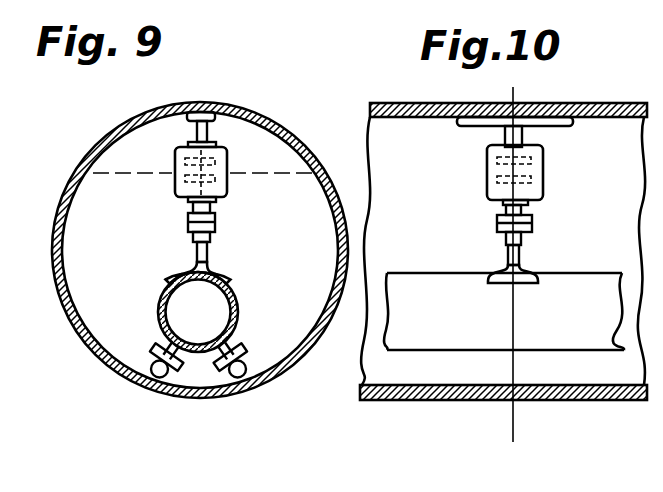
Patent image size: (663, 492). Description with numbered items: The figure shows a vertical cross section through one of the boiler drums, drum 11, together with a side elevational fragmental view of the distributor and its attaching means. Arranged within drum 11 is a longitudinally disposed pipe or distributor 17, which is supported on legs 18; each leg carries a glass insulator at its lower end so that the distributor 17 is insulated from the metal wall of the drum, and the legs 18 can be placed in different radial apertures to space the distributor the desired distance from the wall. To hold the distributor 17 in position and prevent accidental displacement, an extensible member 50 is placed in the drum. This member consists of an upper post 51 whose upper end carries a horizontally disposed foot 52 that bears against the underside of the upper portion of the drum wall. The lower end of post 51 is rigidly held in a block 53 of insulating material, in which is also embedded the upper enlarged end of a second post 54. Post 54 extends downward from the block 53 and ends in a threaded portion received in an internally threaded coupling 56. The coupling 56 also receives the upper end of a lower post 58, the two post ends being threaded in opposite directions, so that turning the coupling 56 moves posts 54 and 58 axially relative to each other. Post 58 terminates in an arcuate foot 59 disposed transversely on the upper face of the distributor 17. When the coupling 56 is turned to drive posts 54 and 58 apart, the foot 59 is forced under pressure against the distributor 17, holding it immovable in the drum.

In FIG. 10, the drum 11 is at (478, 478).
In FIG. 9, the distributor 17 is at (172, 317).
In FIG. 10, the distributor 17 is at (504, 311).
In FIG. 9, the legs 18 is at (163, 378).
In FIG. 9, the extensible member 50 is at (171, 188).
In FIG. 9, the post 51 is at (197, 131).
In FIG. 10, the post 51 is at (523, 131).
In FIG. 9, the foot 52 is at (214, 112).
In FIG. 10, the foot 52 is at (463, 120).
In FIG. 9, the block 53 is at (227, 198).
In FIG. 10, the block 53 is at (490, 180).
In FIG. 10, the post 54 is at (530, 208).
In FIG. 9, the coupling 56 is at (188, 226).
In FIG. 10, the coupling 56 is at (498, 224).
In FIG. 9, the post 58 is at (212, 257).
In FIG. 10, the post 58 is at (525, 260).
In FIG. 9, the arcuate foot 59 is at (172, 277).
In FIG. 10, the arcuate foot 59 is at (492, 270).